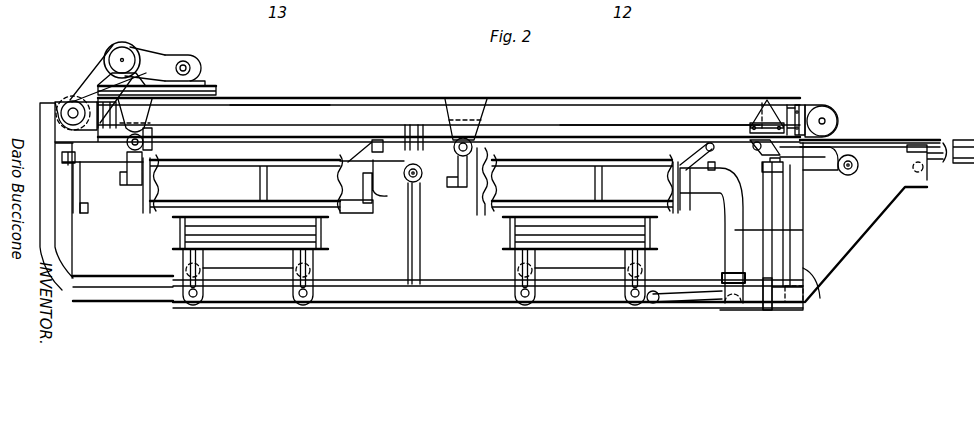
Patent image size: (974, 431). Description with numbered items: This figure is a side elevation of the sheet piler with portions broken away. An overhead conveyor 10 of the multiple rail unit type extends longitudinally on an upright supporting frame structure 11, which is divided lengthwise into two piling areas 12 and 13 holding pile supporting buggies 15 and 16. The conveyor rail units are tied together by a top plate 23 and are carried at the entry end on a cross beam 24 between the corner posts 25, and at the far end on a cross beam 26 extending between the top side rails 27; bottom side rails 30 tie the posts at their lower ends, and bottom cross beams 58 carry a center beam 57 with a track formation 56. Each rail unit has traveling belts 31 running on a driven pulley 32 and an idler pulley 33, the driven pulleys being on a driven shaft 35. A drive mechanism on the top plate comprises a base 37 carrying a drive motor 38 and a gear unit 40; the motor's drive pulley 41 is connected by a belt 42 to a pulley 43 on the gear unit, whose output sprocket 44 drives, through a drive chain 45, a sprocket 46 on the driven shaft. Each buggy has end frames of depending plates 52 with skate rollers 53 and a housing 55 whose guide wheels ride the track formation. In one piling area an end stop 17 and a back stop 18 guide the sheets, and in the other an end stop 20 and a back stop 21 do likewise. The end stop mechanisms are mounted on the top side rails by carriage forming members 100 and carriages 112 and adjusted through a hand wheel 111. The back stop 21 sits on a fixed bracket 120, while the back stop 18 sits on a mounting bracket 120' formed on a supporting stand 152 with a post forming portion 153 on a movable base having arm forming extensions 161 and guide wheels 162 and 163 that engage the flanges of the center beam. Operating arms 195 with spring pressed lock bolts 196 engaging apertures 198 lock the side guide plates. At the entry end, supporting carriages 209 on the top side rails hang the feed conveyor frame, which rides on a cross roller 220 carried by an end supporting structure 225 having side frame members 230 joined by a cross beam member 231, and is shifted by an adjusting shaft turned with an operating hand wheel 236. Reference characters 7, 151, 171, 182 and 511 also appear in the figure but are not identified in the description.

The section line VII 7 is at (366, 84).
The overhead conveyor 10 is at (597, 97).
The upright supporting frame structure 11 is at (92, 305).
The piling area 12 is at (575, 311).
The piling area 13 is at (251, 307).
The pile supporting buggy 15 is at (508, 261).
The pile supporting buggy 16 is at (317, 263).
The end stop 17 is at (471, 208).
The back stop 18 is at (690, 212).
The end stop 20 is at (232, 195).
The back stop 21 is at (335, 243).
The top plate 23 is at (276, 97).
The cross beam 24 is at (795, 104).
The upright corner post 25 is at (819, 292).
The cross beam 26 is at (125, 138).
The top side rail 27 is at (644, 112).
The bottom side rail 30 is at (386, 303).
The traveling belt 31 is at (824, 118).
The driven pulley 32 is at (58, 105).
The idler pulley 33 is at (838, 113).
The driven shaft 35 is at (72, 98).
The base 37 is at (219, 91).
The drive motor 38 is at (198, 64).
The gear unit 40 is at (132, 56).
The drive pulley 41 is at (205, 66).
The belt 42 is at (172, 56).
The pulley 43 is at (126, 42).
The sprocket 44 is at (112, 44).
The drive chain 45 is at (96, 62).
The sprocket 46 is at (83, 95).
The plates 52 is at (220, 299).
The skate rollers 53 is at (193, 306).
The housing 55 is at (263, 258).
The track formation 56 is at (364, 283).
The center beam 57 is at (313, 262).
The bottom cross beam 58 is at (764, 281).
The carriage forming member 100 is at (150, 114).
The hand wheel 111 is at (150, 142).
The carriage 112 is at (455, 100).
The fixed bracket 120 is at (392, 238).
The mounting bracket 120' is at (701, 245).
The vertical rods 151 is at (421, 259).
The supporting stand 152 is at (738, 207).
The post forming portion 153 is at (804, 231).
The arm forming extension 161 is at (688, 303).
The guide wheels 162 is at (727, 306).
The guide wheels 163 is at (652, 304).
The right panel 171 is at (494, 216).
The roller 182 is at (420, 181).
The operating arm 195 is at (81, 178).
The spring pressed lock bolt 196 is at (97, 219).
The aperture 198 is at (81, 195).
The supporting carriage 209 is at (762, 107).
The cross roller 220 is at (926, 163).
The end supporting structure 225 is at (878, 228).
The side frame member 230 is at (843, 262).
The cross beam member 231 is at (917, 189).
The operating hand wheel 236 is at (853, 174).
The dashed pivot 511 is at (186, 268).